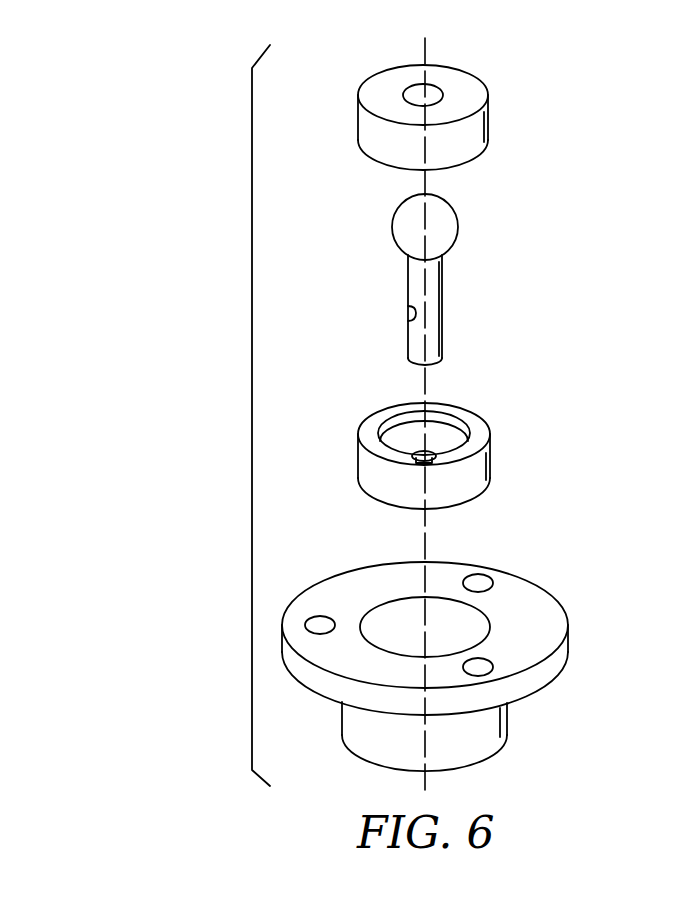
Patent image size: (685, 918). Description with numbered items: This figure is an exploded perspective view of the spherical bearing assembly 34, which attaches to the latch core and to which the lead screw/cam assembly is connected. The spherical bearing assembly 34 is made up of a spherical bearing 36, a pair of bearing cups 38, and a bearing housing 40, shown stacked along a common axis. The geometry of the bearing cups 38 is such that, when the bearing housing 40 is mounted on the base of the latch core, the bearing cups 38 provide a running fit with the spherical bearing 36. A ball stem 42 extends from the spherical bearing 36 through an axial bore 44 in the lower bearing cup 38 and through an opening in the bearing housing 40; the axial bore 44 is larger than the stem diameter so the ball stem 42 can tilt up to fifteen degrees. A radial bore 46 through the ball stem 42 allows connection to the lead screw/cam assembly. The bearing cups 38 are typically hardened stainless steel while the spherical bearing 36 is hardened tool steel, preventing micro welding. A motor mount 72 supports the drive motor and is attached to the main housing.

The spherical bearing assembly 34 is at (252, 412).
The spherical bearing 36 is at (447, 230).
The bearing cups 38 is at (489, 100).
The bearing housing 40 is at (543, 588).
The ball stem 42 is at (441, 345).
The axial bore 44 is at (423, 455).
The radial bore 46 is at (408, 315).
The motor mount 72 is at (488, 140).